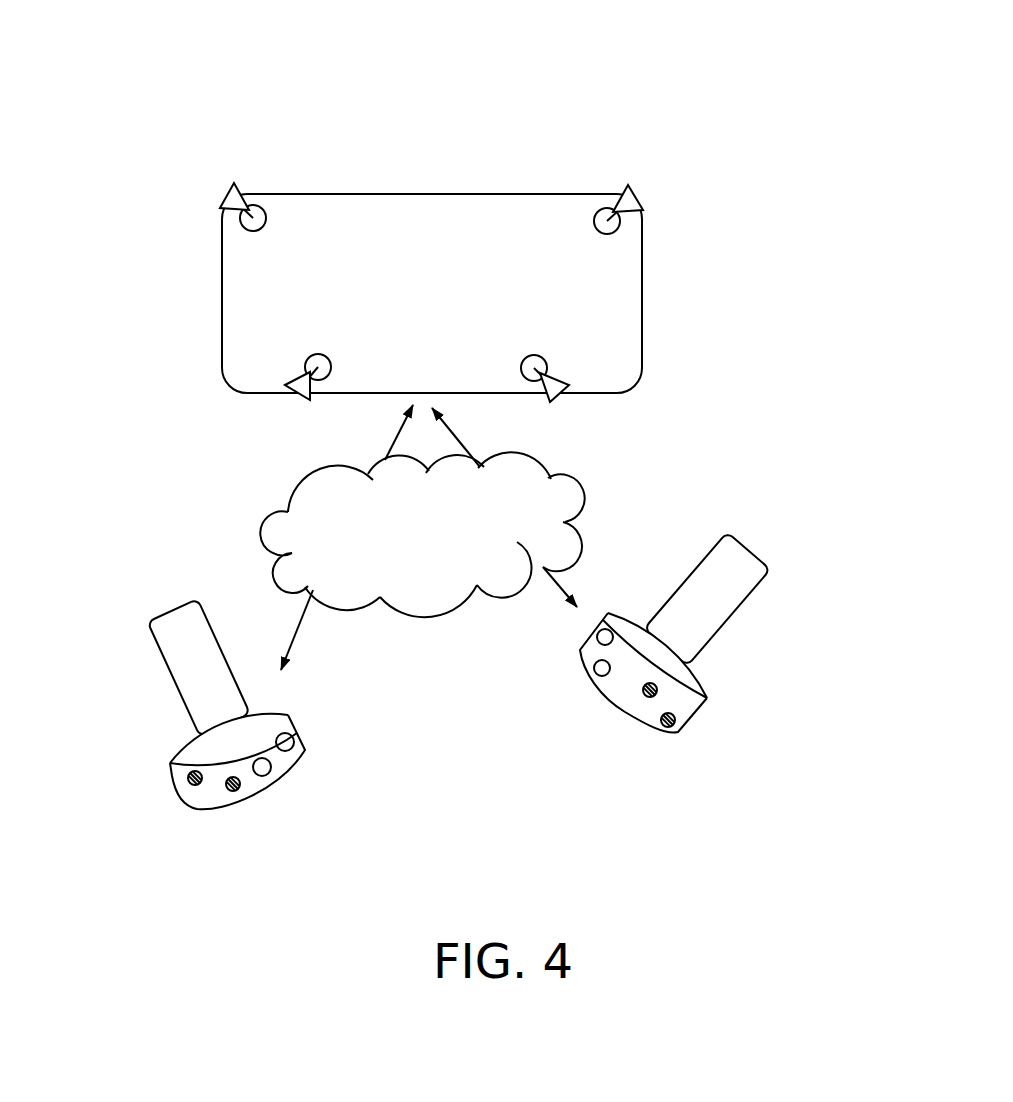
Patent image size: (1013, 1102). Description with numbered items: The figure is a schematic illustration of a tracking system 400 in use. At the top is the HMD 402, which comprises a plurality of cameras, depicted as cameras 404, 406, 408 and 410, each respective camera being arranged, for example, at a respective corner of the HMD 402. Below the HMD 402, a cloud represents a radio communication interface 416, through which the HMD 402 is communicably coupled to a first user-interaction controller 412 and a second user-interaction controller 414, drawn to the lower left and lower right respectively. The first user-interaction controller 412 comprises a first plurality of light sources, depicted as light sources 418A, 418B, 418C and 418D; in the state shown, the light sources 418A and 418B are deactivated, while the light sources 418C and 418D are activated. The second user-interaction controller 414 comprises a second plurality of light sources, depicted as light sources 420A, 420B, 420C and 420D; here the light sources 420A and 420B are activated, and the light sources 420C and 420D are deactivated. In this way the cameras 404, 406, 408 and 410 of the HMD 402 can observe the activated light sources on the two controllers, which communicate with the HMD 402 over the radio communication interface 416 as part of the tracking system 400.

The tracking system 400 is at (736, 77).
The HMD 402 is at (432, 251).
The camera 404 is at (599, 173).
The camera 406 is at (267, 172).
The camera 408 is at (207, 347).
The camera 410 is at (652, 356).
The first user-interaction controller 412 is at (486, 772).
The second user-interaction controller 414 is at (616, 645).
The radio communication interface 416 is at (422, 552).
The light source 418A is at (118, 797).
The light source 418B is at (569, 861).
The light source 418C is at (298, 808).
The light source 418D is at (347, 770).
The light source 420A is at (538, 650).
The light source 420B is at (562, 710).
The light source 420C is at (620, 736).
The light source 420D is at (694, 766).